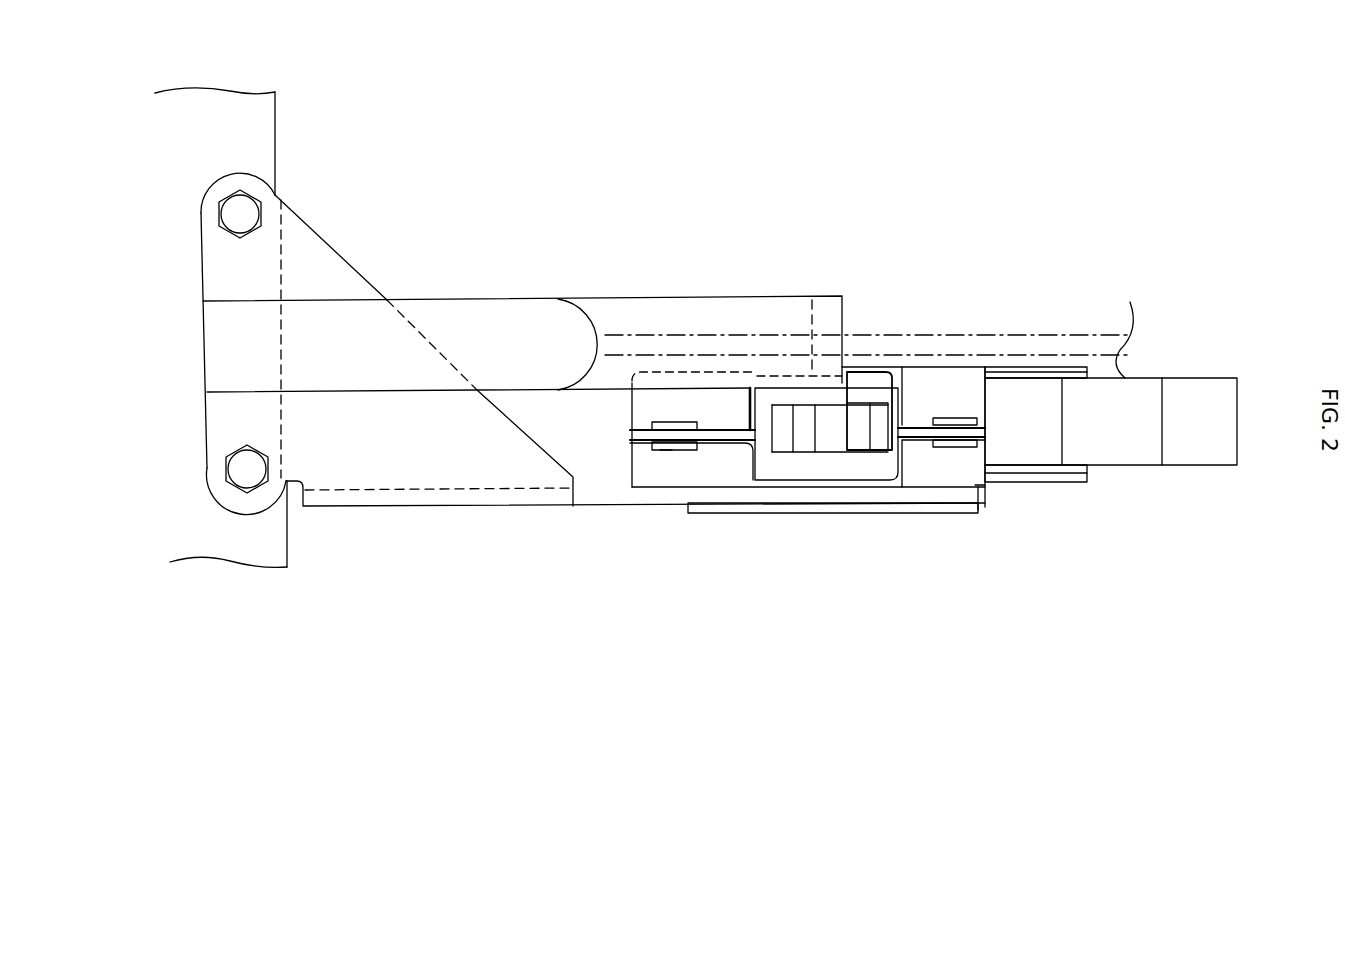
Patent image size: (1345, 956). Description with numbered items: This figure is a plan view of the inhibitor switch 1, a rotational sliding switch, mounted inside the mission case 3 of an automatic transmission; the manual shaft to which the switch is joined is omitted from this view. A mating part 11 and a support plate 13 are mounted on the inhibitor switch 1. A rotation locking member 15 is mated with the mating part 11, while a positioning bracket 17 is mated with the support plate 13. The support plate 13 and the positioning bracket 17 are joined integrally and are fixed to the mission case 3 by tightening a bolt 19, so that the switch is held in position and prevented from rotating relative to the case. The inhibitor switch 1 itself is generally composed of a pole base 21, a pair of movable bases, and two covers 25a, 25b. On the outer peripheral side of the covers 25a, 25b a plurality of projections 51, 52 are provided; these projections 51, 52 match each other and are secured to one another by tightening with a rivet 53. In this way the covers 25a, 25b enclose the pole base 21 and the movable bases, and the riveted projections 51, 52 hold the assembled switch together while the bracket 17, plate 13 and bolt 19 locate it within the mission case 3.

The inhibitor switch 1 is at (1176, 349).
The mission case 3 is at (278, 127).
The mating part 11 is at (875, 400).
The support plate 13 is at (755, 515).
The rotation locking member 15 is at (673, 296).
The positioning bracket 17 is at (500, 507).
The bolt 19 is at (228, 214).
The pole base 21 is at (860, 386).
The cover 25a is at (960, 463).
The cover 25b is at (949, 373).
The projection 51 is at (710, 447).
The projection 52 is at (730, 422).
The rivet 53 is at (663, 452).